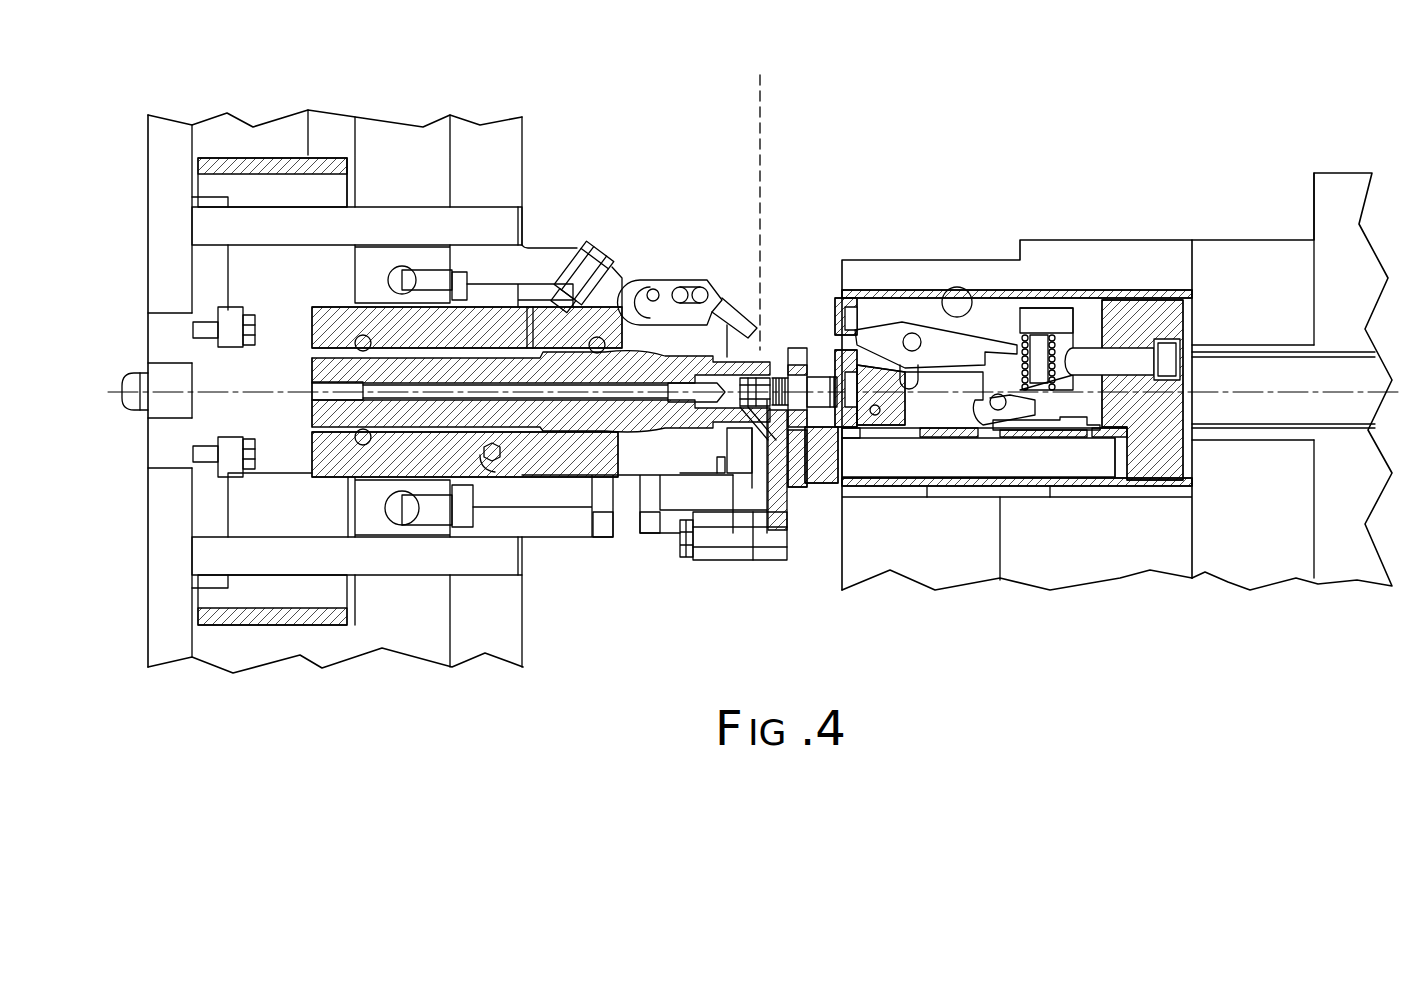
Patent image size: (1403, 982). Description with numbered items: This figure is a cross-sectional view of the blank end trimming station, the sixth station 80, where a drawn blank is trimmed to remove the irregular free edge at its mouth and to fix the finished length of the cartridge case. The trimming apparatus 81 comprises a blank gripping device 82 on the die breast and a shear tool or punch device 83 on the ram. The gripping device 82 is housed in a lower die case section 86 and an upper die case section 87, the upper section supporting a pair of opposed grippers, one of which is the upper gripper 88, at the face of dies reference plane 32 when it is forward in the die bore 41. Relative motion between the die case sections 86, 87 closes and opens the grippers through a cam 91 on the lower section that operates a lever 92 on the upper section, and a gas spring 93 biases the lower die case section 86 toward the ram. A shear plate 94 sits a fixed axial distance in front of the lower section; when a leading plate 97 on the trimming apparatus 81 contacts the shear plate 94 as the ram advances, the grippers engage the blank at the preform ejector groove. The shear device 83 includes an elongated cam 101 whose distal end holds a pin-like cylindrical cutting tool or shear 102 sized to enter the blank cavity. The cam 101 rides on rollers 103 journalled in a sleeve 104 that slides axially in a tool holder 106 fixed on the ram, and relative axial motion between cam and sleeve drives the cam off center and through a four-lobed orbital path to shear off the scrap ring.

The face of dies reference plane 32 is at (760, 160).
The die bore 41 is at (1038, 317).
The sixth station 80 is at (122, 400).
The trimming apparatus 81 is at (852, 155).
The blank gripping device 82 is at (901, 253).
The shear tool or punch device 83 is at (727, 278).
The lower die case section 86 is at (910, 303).
The upper die case section 87 is at (1083, 478).
The upper gripper 88 is at (833, 307).
The cam 91 is at (1067, 423).
The lever 92 is at (958, 345).
The gas spring 93 is at (968, 460).
The shear plate 94 is at (797, 482).
The leading plate 97 is at (793, 523).
The elongated cam 101 is at (662, 428).
The cylindrical cutting tool or shear 102 is at (773, 377).
The rollers 103 is at (363, 335).
The sleeve 104 is at (543, 455).
The tool holder 106 is at (530, 527).